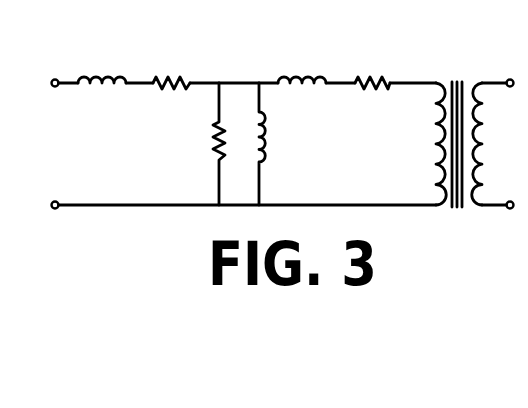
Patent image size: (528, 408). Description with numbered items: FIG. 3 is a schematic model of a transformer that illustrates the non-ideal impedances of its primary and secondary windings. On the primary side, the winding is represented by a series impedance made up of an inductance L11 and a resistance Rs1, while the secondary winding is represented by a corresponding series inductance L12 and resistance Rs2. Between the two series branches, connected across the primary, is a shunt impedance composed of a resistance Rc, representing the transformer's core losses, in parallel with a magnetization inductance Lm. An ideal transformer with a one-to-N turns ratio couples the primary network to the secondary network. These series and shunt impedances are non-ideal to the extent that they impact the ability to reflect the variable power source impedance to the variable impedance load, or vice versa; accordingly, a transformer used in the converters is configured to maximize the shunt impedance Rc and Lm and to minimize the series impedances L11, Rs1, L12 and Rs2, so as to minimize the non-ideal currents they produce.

The primary winding series inductance L11 is at (102, 62).
The primary winding series resistance Rs1 is at (172, 65).
The secondary winding series inductance L12 is at (302, 62).
The secondary winding series resistance Rs2 is at (372, 65).
The core loss resistance Rc is at (205, 144).
The magnetization inductance Lm is at (283, 144).